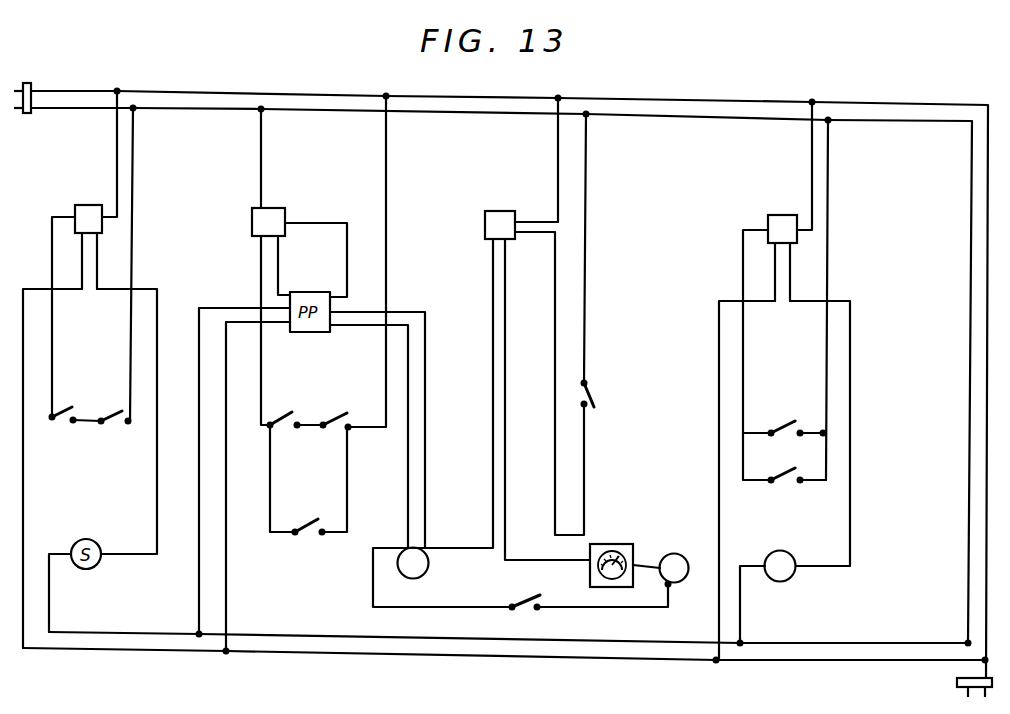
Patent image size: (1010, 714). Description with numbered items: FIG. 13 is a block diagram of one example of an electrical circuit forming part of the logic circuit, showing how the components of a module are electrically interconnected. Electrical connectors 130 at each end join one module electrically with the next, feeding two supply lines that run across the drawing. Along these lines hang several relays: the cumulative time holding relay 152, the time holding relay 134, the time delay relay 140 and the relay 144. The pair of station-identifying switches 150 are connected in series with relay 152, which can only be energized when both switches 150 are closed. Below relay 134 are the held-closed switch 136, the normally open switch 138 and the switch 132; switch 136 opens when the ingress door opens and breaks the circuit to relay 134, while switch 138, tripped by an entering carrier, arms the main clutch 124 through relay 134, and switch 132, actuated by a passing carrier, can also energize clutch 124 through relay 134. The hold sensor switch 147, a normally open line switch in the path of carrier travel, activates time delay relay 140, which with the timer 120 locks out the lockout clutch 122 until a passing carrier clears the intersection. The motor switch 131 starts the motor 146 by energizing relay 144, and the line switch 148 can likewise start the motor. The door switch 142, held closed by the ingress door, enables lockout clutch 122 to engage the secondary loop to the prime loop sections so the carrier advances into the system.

The electrical connectors 130 is at (40, 78).
The cumulative time holding relay 152 is at (88, 205).
The time holding relay 134 is at (275, 208).
The time delay relay 140 is at (512, 240).
The relay 144 is at (777, 215).
The station identifying switches 150 is at (60, 425).
The held closed switch 136 is at (276, 430).
The normally open switch 138 is at (336, 429).
The switch 132 is at (316, 525).
The hold sensor switch 147 is at (595, 392).
The motor switch 131 is at (792, 425).
The line switch 148 is at (786, 482).
The motor 146 is at (776, 582).
The main clutch 124 is at (428, 569).
The door switch 142 is at (522, 598).
The timer 120 is at (590, 583).
The lockout clutch 122 is at (662, 582).